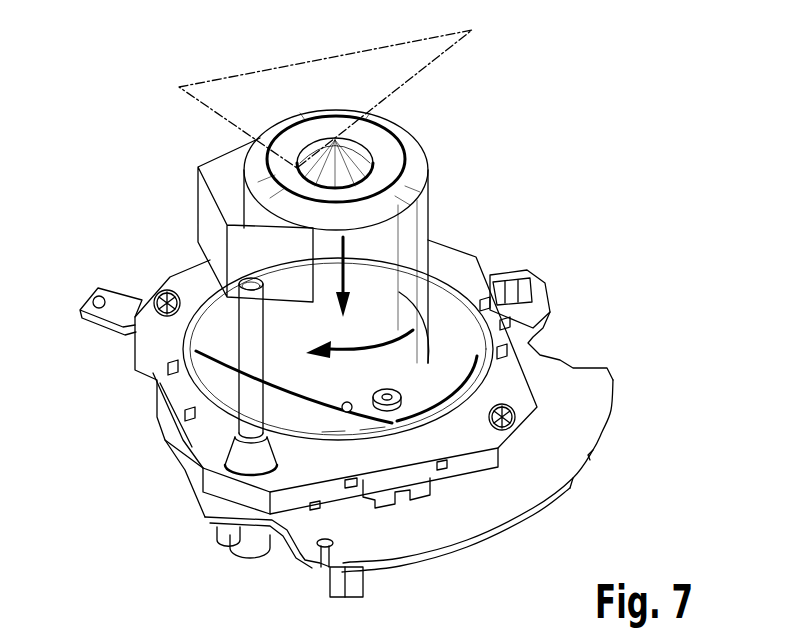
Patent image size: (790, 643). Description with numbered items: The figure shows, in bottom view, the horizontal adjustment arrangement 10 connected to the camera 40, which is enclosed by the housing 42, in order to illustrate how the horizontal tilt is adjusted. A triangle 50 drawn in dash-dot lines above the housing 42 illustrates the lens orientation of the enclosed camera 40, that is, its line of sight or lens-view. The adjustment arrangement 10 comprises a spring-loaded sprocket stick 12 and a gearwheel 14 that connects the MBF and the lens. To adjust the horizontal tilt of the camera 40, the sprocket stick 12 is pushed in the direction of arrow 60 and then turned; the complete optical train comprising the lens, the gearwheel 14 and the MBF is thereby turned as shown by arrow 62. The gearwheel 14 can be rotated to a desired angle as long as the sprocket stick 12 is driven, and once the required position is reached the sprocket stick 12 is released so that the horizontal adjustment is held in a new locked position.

The horizontal adjustment arrangement 10 is at (603, 512).
The sprocket stick 12 is at (250, 385).
The gearwheel 14 is at (186, 338).
The camera 40 is at (456, 205).
The housing 42 is at (218, 173).
The triangle 50 is at (243, 75).
The arrow 60 is at (343, 277).
The arrow 62 is at (398, 357).